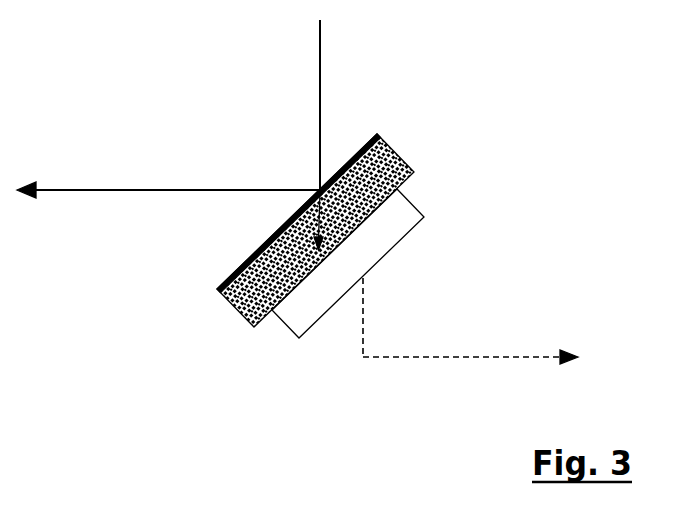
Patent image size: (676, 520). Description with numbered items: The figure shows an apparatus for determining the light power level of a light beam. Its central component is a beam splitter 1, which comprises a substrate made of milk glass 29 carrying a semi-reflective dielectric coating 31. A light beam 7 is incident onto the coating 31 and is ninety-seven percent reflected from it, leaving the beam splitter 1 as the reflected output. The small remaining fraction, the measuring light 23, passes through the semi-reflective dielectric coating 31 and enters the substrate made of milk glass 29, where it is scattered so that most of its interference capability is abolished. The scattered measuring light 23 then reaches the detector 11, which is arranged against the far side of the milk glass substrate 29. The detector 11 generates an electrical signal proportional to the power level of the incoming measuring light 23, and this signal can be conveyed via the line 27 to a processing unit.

The beam splitter 1 is at (432, 130).
The light beam 7 is at (320, 76).
The detector 11 is at (395, 220).
The measuring light 23 is at (287, 224).
The line 27 is at (463, 357).
The substrate made of milk glass 29 is at (246, 312).
The semi-reflective dielectric coating 31 is at (327, 180).